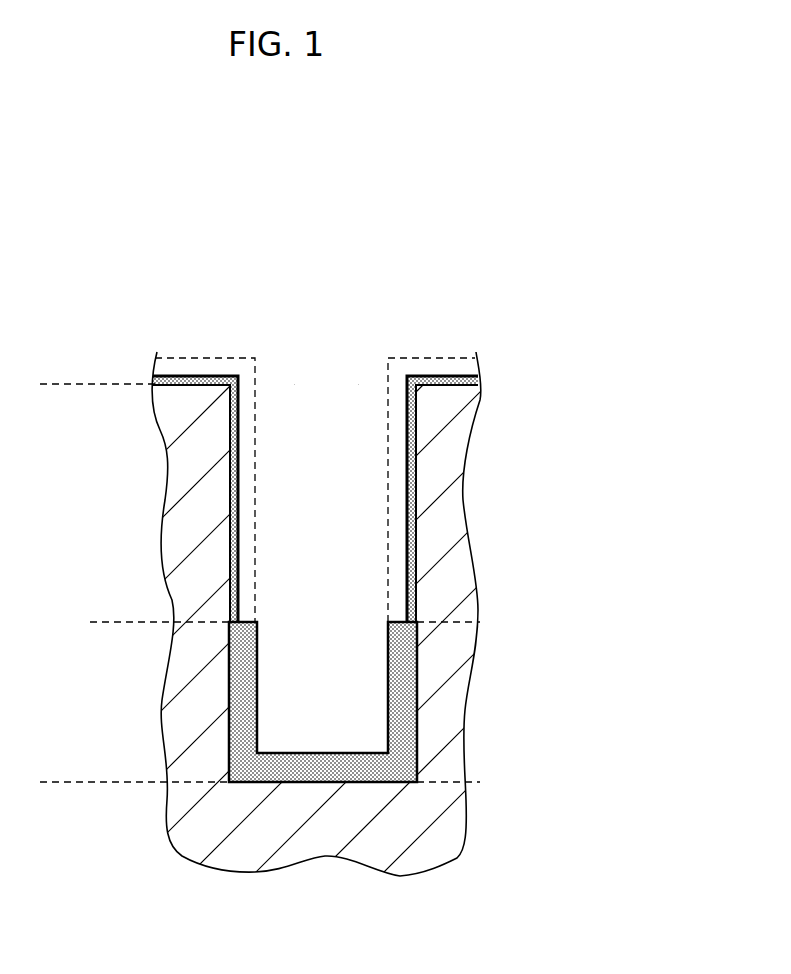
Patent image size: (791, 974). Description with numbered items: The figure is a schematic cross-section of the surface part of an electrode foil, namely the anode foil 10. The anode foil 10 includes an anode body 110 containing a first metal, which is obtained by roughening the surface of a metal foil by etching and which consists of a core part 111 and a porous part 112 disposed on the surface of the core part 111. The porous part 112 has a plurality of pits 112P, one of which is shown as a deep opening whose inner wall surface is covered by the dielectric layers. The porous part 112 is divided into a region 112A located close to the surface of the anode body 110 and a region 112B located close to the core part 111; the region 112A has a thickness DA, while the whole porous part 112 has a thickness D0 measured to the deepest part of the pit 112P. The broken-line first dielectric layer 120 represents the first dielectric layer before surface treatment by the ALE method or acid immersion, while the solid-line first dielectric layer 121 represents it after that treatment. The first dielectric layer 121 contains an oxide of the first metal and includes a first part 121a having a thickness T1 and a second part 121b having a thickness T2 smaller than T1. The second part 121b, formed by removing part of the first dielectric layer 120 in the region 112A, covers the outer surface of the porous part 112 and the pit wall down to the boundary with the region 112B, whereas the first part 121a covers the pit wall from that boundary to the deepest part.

The anode foil 10 is at (182, 336).
The anode body 110 is at (650, 578).
The core part 111 is at (440, 842).
The porous part 112 is at (600, 545).
The region A 112A is at (455, 532).
The region B 112B is at (442, 673).
The pit 112P is at (316, 390).
The first dielectric layer before surface treatment 120 is at (412, 356).
The first dielectric layer 121 is at (592, 445).
The first part 121a is at (392, 647).
The second part 121b is at (414, 440).
The thickness of the porous part D0 is at (60, 384).
The thickness of region A DA is at (104, 384).
The thickness of the first part T1 is at (212, 699).
The thickness of the second part T2 is at (210, 492).